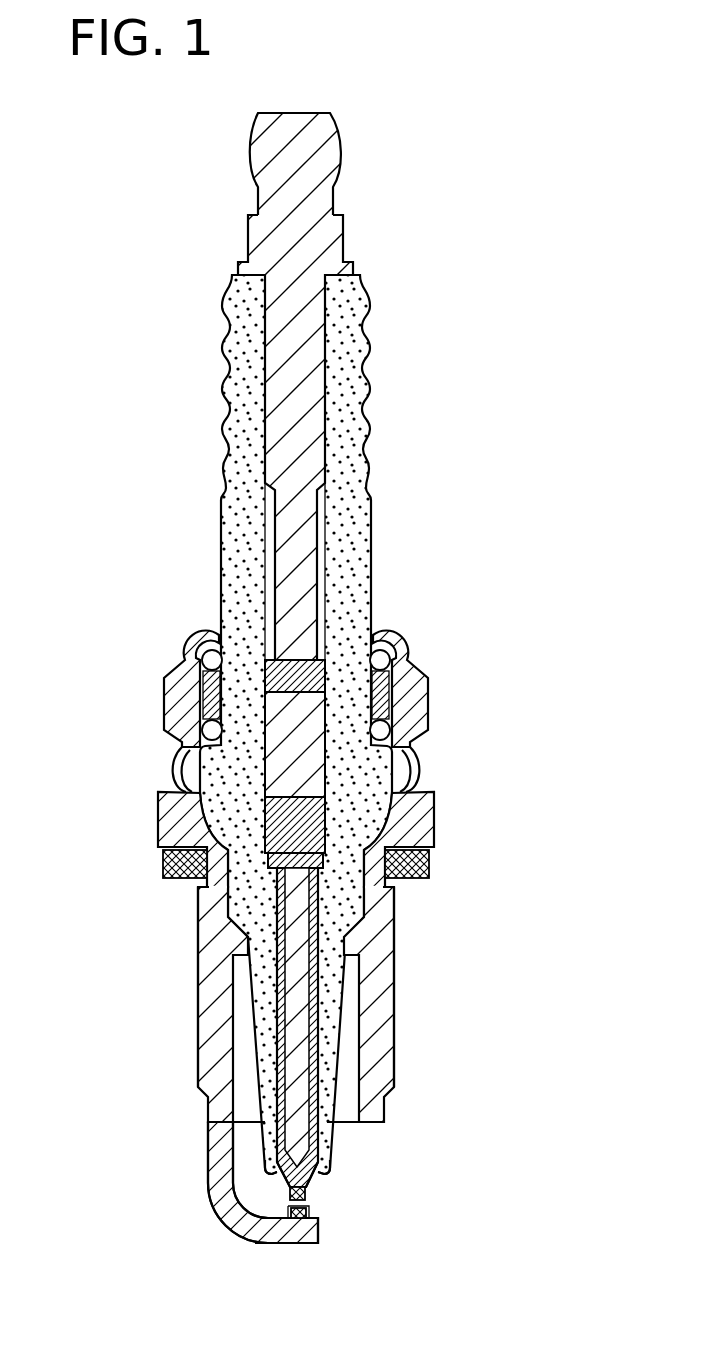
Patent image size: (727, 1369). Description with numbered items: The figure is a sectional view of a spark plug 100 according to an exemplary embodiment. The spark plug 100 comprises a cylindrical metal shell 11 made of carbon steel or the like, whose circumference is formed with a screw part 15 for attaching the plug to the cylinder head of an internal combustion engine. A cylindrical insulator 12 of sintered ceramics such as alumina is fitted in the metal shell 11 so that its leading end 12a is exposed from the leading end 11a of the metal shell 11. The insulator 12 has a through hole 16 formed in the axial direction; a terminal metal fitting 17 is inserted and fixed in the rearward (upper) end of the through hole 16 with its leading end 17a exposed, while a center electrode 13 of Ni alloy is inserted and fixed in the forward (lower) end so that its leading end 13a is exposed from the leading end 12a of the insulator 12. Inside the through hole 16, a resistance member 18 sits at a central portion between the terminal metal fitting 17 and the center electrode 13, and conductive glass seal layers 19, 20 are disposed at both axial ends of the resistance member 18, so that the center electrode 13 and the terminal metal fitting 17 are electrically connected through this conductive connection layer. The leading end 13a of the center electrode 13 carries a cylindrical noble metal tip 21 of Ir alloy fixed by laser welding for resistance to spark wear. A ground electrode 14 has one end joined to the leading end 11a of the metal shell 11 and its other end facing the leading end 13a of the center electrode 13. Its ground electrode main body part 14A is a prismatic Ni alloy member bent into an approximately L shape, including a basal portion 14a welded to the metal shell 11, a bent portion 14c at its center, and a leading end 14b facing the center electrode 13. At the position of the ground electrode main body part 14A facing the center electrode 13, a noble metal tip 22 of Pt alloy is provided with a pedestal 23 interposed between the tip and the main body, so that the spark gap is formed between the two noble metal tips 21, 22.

The spark plug 100 is at (450, 260).
The metal shell 11 is at (164, 836).
The leading end of the metal shell 11a is at (388, 1112).
The insulator 12 is at (240, 475).
The leading end of the insulator 12a is at (327, 1140).
The center electrode 13 is at (303, 997).
The leading end of the center electrode 13a is at (313, 1180).
The ground electrode 14 is at (183, 1227).
The basal portion 14a is at (210, 1172).
The leading end of the ground electrode main body 14b is at (275, 1236).
The bent portion 14c is at (213, 1200).
The ground electrode main body part 14A is at (215, 1222).
The screw part 15 is at (394, 962).
The through hole 16 is at (267, 365).
The terminal metal fitting 17 is at (320, 197).
The leading end of the terminal metal fitting 17a is at (320, 137).
The resistance member 18 is at (312, 760).
The conductive glass seal layer 19 is at (312, 818).
The conductive glass seal layer 20 is at (312, 672).
The noble metal tip 21 is at (308, 1200).
The noble metal tip 22 is at (312, 1212).
The pedestal 23 is at (297, 1222).